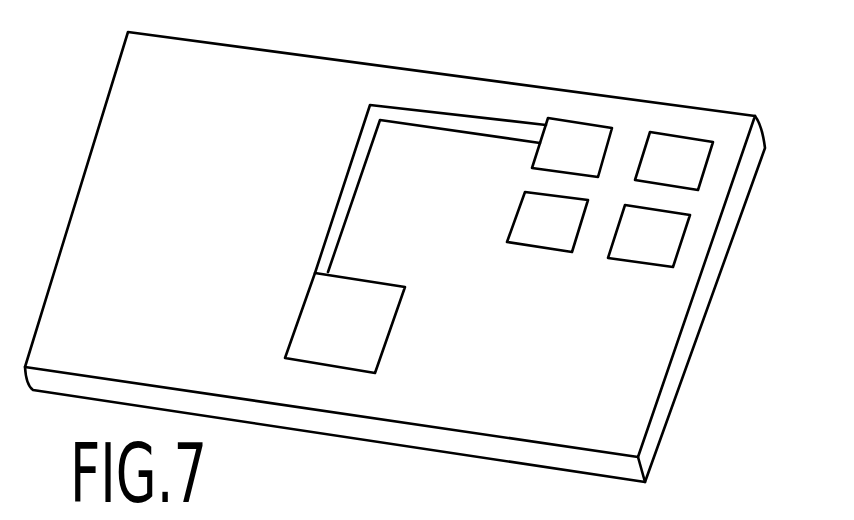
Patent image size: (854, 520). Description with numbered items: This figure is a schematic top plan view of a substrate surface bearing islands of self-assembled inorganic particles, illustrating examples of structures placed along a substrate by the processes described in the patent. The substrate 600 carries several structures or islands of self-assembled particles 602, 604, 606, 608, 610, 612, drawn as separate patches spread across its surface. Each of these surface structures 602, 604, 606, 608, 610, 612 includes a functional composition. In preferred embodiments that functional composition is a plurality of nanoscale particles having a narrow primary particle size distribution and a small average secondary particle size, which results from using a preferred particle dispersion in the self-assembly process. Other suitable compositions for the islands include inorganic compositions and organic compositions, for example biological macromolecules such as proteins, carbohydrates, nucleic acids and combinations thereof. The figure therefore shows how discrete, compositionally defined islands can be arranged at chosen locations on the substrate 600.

The substrate 600 is at (673, 382).
The island of self-assembled particles 602 is at (323, 350).
The island of self-assembled particles 604 is at (428, 118).
The island of self-assembled particles 606 is at (570, 127).
The island of self-assembled particles 608 is at (675, 137).
The island of self-assembled particles 610 is at (675, 235).
The island of self-assembled particles 612 is at (543, 252).